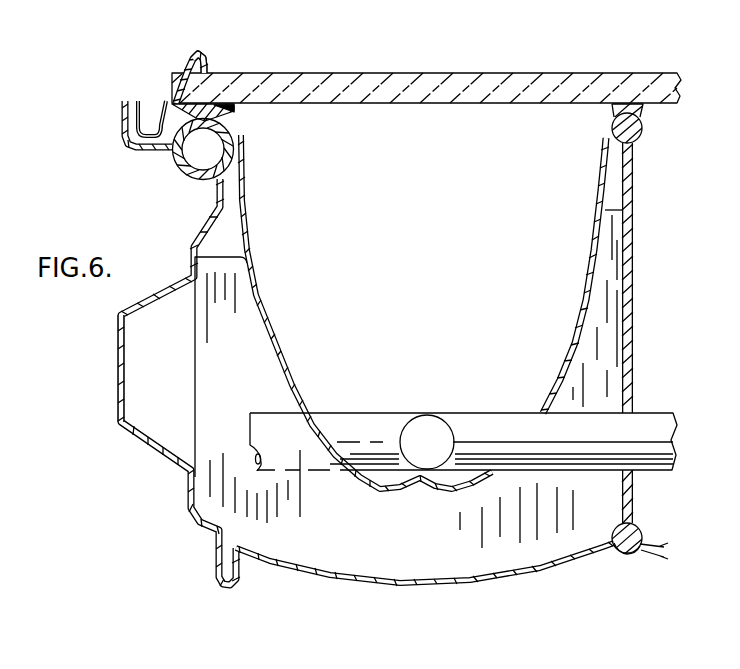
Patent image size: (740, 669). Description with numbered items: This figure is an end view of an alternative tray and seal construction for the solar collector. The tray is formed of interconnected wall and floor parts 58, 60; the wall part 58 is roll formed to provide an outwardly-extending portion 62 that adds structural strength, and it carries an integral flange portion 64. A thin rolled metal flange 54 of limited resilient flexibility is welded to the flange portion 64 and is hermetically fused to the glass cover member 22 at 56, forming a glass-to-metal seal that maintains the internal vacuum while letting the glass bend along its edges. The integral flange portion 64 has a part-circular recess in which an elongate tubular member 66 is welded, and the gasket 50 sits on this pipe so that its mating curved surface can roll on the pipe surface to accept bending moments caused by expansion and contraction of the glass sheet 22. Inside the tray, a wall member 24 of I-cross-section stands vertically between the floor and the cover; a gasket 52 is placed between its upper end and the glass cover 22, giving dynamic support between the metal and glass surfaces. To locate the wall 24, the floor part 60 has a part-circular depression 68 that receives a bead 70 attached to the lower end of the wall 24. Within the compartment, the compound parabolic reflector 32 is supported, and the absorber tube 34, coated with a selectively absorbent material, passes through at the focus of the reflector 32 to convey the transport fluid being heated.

The cover member 22 is at (404, 90).
The wall member 24 is at (634, 287).
The reflector 32 is at (274, 344).
The absorber tube 34 is at (417, 437).
The gasket 50 is at (233, 110).
The gasket 52 is at (642, 120).
The rolled metal flange 54 is at (172, 82).
The glass-to-metal seal 56 is at (201, 64).
The wall part 58 is at (148, 450).
The floor part 60 is at (444, 582).
The outwardly-extending portion 62 is at (118, 378).
The integral flange portion 64 is at (157, 162).
The tubular member 66 is at (191, 178).
The part-circular depression 68 is at (628, 555).
The bead 70 is at (616, 532).